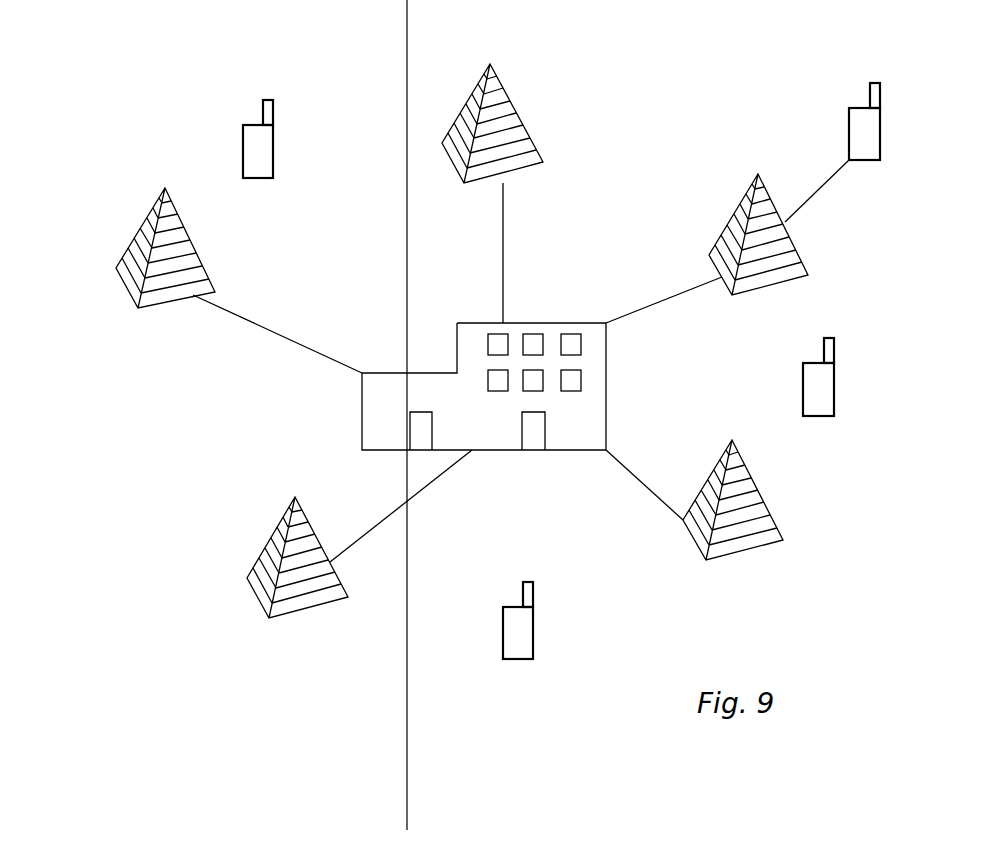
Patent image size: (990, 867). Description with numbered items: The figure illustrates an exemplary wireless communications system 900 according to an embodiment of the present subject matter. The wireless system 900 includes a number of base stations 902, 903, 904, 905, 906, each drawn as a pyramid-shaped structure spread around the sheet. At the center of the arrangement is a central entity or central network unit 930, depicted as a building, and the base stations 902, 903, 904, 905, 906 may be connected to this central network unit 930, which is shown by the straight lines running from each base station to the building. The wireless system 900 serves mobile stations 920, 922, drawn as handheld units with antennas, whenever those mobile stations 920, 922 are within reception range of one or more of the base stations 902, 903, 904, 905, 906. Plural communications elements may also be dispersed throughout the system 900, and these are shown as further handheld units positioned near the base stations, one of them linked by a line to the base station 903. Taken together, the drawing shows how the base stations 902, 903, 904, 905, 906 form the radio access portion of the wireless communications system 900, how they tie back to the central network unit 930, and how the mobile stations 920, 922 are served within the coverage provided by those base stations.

The wireless communications system 900 is at (99, 128).
The base station 902 is at (493, 123).
The base station 903 is at (758, 244).
The base station 904 is at (733, 508).
The base station 905 is at (297, 572).
The base station 906 is at (165, 265).
The mobile station 920 is at (273, 150).
The mobile station 922 is at (533, 630).
The central network unit 930 is at (606, 415).